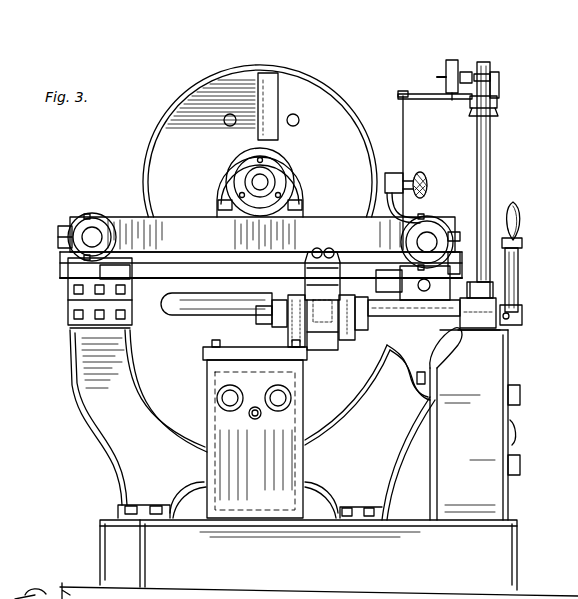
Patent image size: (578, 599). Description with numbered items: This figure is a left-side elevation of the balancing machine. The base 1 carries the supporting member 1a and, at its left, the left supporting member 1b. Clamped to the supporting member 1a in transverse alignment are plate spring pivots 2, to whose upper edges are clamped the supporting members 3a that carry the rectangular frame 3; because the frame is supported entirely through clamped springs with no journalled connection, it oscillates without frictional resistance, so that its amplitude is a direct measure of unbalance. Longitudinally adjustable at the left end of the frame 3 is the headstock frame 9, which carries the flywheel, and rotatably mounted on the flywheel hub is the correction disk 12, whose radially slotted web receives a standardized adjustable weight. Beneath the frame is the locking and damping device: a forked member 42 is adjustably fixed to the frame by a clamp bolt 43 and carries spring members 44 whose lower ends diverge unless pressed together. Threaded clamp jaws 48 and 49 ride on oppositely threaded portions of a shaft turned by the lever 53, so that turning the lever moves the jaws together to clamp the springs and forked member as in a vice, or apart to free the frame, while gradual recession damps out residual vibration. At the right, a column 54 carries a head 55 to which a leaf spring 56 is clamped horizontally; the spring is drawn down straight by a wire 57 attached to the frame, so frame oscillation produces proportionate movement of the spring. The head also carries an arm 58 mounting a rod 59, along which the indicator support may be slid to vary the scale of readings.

The base 1 is at (319, 558).
The supporting member 1a is at (252, 424).
The left supporting member 1b is at (255, 429).
The plate spring pivot 2 is at (68, 305).
The rectangular frame 3 is at (146, 266).
The supporting member 3a is at (118, 282).
The headstock frame 9 is at (262, 234).
The correction disk 12 is at (260, 141).
The forked member 42 is at (332, 252).
The clamp bolt 43 is at (315, 250).
The spring member 44 is at (306, 343).
The clamp jaw 48 is at (290, 327).
The clamp jaw 49 is at (350, 338).
The lever 53 is at (519, 221).
The column 54 is at (490, 162).
The head 55 is at (498, 111).
The leaf spring 56 is at (445, 98).
The wire 57 is at (405, 152).
The arm 58 is at (499, 86).
The rod 59 is at (440, 77).